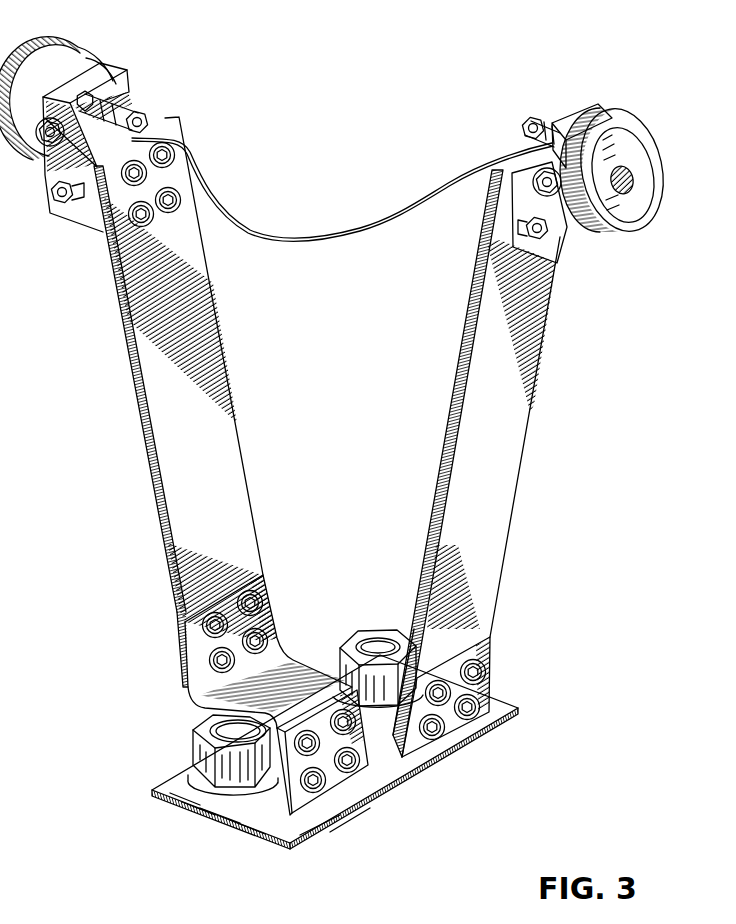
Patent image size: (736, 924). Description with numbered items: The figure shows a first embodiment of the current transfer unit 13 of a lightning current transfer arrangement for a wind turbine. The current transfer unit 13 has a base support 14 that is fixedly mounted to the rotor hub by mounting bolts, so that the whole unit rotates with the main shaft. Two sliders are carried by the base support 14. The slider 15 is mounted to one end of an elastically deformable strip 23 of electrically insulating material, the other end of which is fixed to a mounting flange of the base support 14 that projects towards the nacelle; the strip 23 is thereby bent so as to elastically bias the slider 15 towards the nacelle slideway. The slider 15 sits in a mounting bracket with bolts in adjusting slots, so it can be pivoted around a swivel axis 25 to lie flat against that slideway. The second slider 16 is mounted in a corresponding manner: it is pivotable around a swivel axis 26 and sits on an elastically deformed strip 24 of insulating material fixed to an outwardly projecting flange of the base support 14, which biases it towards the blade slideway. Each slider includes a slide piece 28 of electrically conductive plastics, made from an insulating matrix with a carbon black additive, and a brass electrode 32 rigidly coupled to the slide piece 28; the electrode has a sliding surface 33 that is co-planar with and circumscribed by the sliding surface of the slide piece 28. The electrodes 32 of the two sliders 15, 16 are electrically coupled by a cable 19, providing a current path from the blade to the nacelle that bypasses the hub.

The current transfer unit 13 is at (78, 583).
The base support 14 is at (427, 761).
The slider 15 is at (528, 104).
The second slider 16 is at (193, 107).
The cable 19 is at (298, 234).
The elastically deformable strip 23 is at (505, 459).
The elastically deformed strip 24 is at (160, 430).
The swivel axis 25 is at (540, 190).
The swivel axis 26 is at (50, 144).
The slide piece 28 is at (66, 49).
The electrode 32 is at (118, 102).
The sliding surface 33 is at (640, 178).